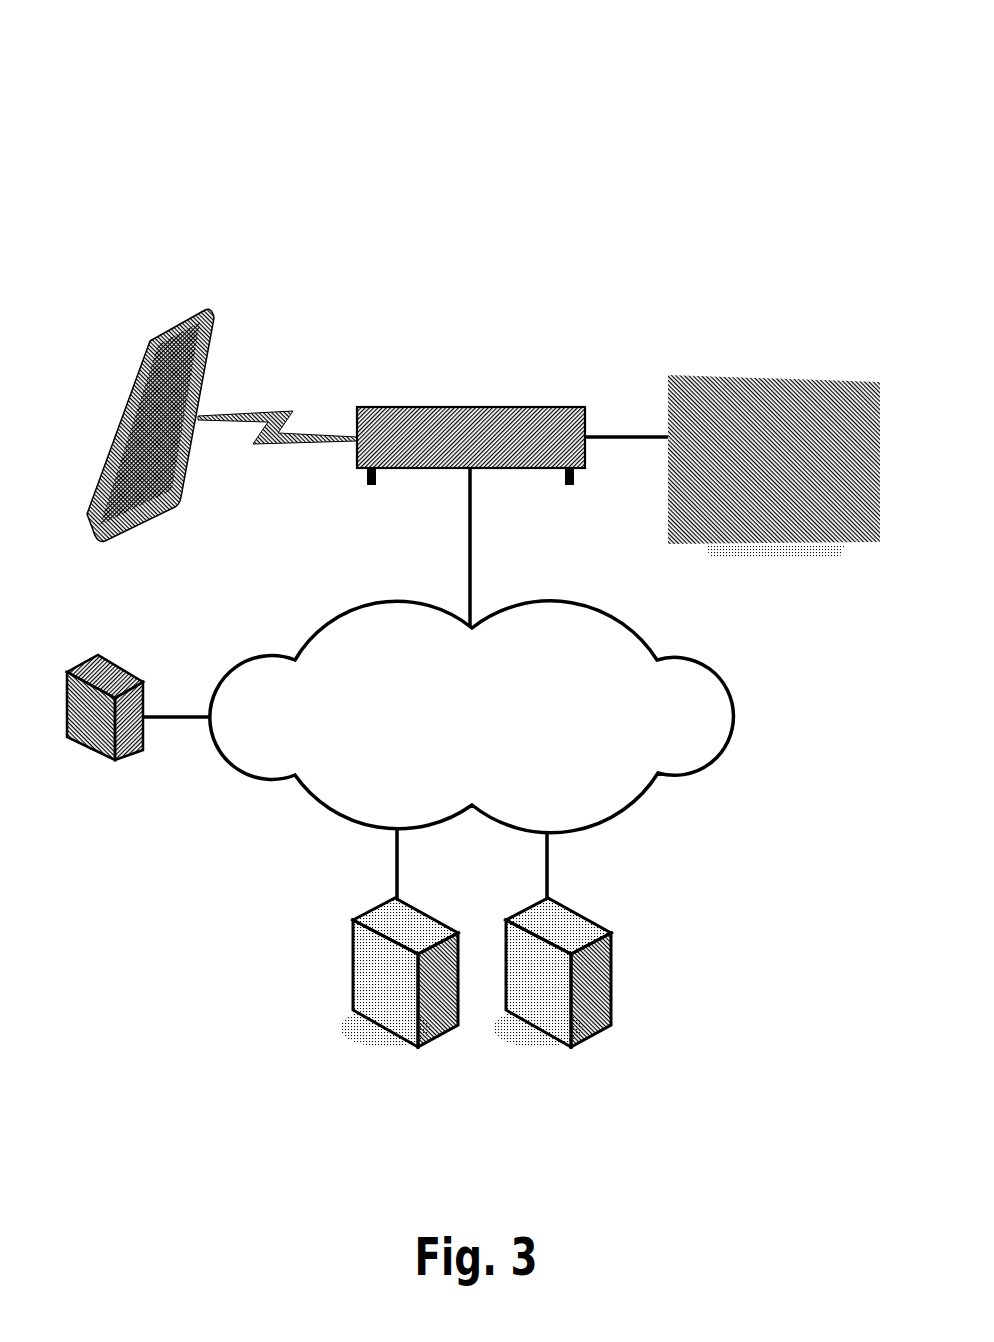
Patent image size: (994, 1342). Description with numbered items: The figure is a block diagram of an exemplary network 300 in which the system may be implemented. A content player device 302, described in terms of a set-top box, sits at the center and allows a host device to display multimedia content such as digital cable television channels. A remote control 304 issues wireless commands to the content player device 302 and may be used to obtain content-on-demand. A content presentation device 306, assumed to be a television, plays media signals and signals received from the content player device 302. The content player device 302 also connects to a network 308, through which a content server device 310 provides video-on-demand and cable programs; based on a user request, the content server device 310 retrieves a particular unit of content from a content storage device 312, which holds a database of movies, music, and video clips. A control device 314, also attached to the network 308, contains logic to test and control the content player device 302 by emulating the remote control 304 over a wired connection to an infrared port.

The network 300 is at (470, 78).
The content player device 302 is at (377, 407).
The remote control 304 is at (170, 328).
The content presentation device 306 is at (771, 413).
The network 308 is at (488, 740).
The content server device 310 is at (353, 962).
The content storage device 312 is at (613, 962).
The control device 314 is at (115, 760).